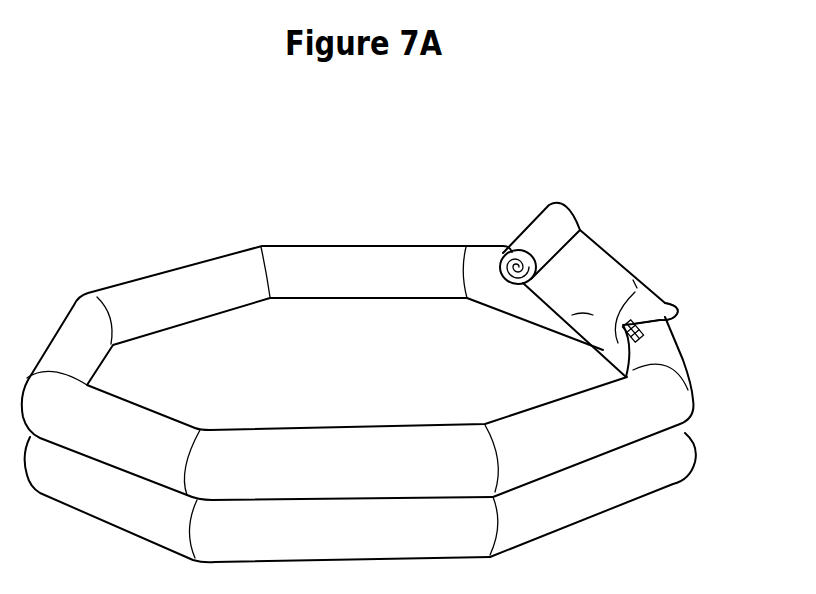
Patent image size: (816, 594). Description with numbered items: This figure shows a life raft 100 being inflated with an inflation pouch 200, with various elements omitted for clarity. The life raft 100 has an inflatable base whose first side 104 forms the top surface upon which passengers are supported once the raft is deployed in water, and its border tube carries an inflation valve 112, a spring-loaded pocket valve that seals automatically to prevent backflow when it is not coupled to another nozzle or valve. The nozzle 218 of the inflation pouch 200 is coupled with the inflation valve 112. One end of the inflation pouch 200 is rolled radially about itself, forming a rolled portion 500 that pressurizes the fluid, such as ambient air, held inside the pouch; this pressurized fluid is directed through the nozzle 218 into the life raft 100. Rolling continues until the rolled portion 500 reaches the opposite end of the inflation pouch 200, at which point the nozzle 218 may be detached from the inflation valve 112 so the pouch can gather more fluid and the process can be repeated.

The life raft 100 is at (359, 361).
The first side 104 is at (395, 372).
The inflation pouch 200 is at (636, 269).
The rolled portion 500 is at (556, 197).
The nozzle 218 is at (630, 322).
The inflation valve 112 is at (643, 334).